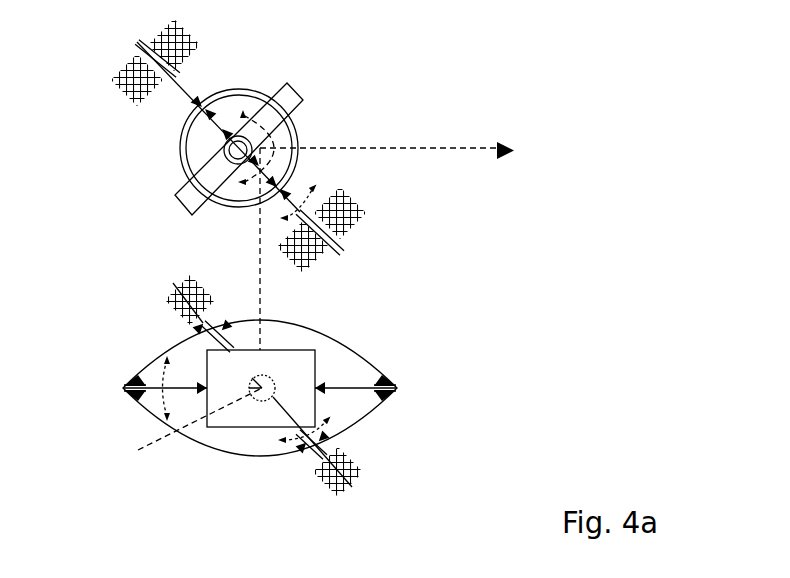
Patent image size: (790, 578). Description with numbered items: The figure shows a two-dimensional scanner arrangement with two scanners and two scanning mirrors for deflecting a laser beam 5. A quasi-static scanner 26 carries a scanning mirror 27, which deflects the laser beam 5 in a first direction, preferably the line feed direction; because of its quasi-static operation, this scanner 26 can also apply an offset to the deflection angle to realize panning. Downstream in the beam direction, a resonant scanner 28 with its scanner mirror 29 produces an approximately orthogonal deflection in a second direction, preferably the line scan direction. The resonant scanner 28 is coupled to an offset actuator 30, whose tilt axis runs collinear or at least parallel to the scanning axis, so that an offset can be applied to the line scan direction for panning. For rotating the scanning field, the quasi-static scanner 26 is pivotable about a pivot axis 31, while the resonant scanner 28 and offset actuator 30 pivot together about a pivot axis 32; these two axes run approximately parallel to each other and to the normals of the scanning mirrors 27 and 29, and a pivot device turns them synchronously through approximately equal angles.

The laser beam 5 is at (462, 153).
The quasi-static scanner 26 is at (145, 362).
The scanning mirror 27 is at (262, 417).
The resonant scanner 28 is at (287, 97).
The scanner mirror 29 is at (180, 190).
The offset actuator 30 is at (305, 147).
The pivot axis 31 is at (357, 468).
The pivot axis 32 is at (343, 247).